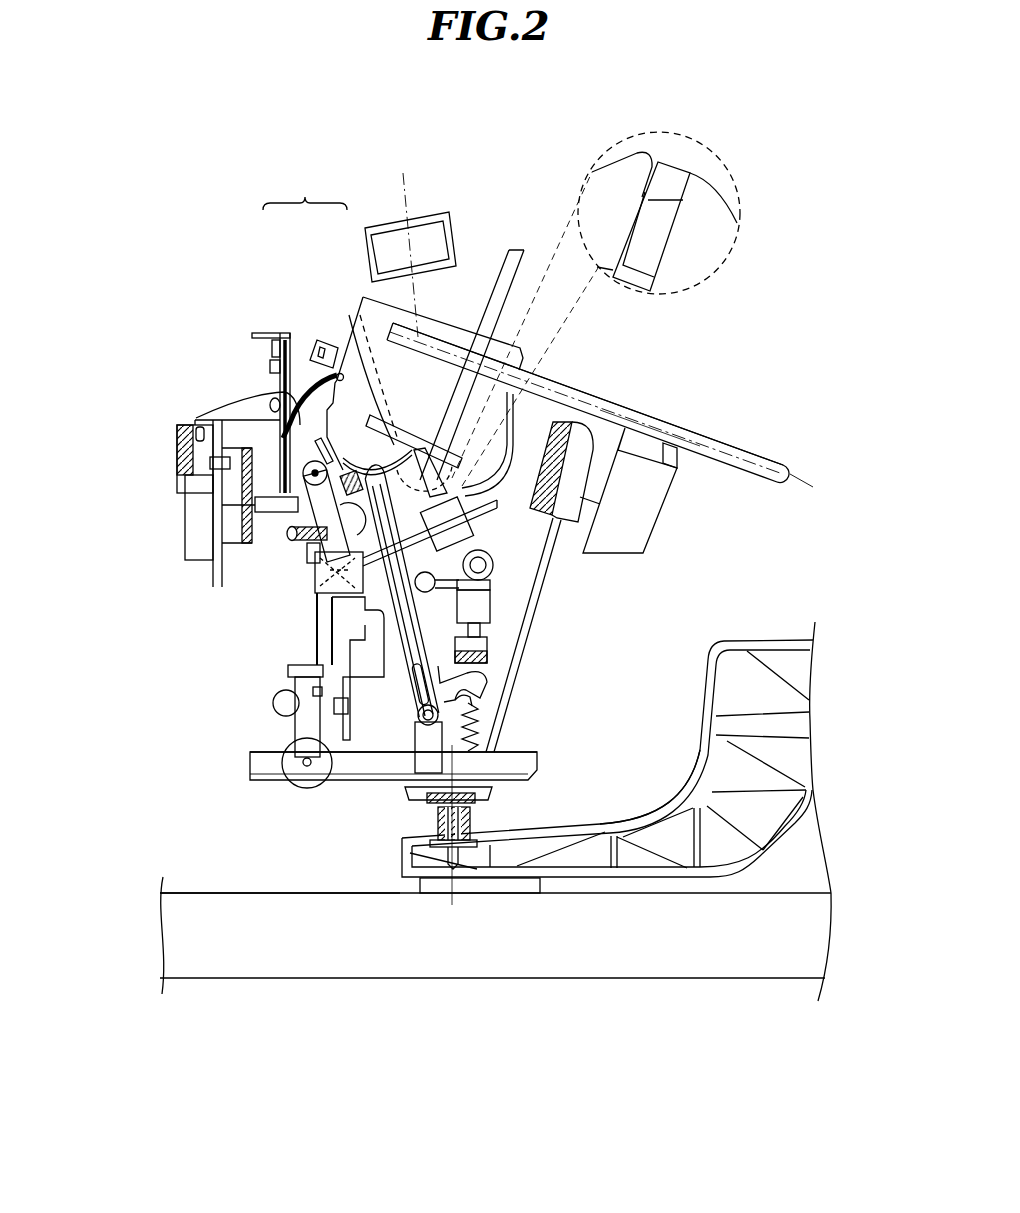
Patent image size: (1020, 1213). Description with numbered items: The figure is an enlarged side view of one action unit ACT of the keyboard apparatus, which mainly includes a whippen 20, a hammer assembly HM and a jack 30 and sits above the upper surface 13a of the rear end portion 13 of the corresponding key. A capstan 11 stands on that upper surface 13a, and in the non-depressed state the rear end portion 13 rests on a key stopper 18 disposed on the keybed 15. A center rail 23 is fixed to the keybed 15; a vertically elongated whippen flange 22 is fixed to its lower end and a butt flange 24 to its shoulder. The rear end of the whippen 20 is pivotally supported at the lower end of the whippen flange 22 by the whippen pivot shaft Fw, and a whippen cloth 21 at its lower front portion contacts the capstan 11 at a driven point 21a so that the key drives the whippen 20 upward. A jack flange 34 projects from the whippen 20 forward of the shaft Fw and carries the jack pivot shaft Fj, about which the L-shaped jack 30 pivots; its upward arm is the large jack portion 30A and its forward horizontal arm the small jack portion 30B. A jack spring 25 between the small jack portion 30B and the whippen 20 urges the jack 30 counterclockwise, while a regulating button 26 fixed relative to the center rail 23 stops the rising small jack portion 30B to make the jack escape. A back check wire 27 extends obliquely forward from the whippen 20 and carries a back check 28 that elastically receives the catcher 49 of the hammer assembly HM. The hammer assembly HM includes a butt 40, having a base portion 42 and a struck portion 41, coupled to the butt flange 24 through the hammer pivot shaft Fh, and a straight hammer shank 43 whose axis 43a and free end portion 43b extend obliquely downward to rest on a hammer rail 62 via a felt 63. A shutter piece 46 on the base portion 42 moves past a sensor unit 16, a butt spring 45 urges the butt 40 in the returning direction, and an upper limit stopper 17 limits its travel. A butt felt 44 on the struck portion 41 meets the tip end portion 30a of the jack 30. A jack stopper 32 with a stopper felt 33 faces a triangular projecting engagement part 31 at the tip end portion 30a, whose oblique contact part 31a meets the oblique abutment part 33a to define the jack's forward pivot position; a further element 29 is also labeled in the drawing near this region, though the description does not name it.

The capstan 11 is at (378, 878).
The rear end portion 13 is at (506, 866).
The upper surface of the rear end portion 13a is at (541, 840).
The keybed 15 is at (718, 964).
The sensor unit 16 is at (263, 347).
The upper limit stopper 17 is at (453, 272).
The key stopper 18 is at (430, 890).
The whippen 20 is at (538, 756).
The whippen cloth 21 is at (438, 808).
The driven point 21a is at (483, 835).
The whippen flange 22 is at (302, 730).
The center rail 23 is at (320, 628).
The butt flange 24 is at (318, 482).
The jack spring 25 is at (488, 733).
The regulating button 26 is at (490, 650).
The back check wire 27 is at (548, 548).
The back check 28 is at (587, 497).
The hook stopper 29 is at (497, 492).
The jack 30 is at (400, 637).
The tip end portion 30a is at (352, 328).
The large jack portion 30A is at (384, 646).
The small jack portion 30B is at (488, 692).
The projecting engagement part 31 is at (465, 366).
The contact part 31a is at (683, 200).
The jack stopper 32 is at (460, 466).
The stopper felt 33 is at (510, 335).
The abutment part 33a is at (633, 190).
The jack flange 34 is at (415, 742).
The butt 40 is at (305, 189).
The struck portion 41 is at (315, 339).
The base portion 42 is at (363, 296).
The hammer shank 43 is at (658, 412).
The axis of the hammer shank 43a is at (693, 416).
The free end portion of the hammer shank 43b is at (797, 472).
The butt felt 44 is at (318, 545).
The butt spring 45 is at (278, 384).
The shutter piece 46 is at (322, 335).
The catcher 49 is at (482, 516).
The hammer rail 62 is at (675, 495).
The felt 63 is at (678, 462).
The hammer assembly HM is at (455, 316).
The hammer pivot shaft Fh is at (305, 470).
The whippen pivot shaft Fw is at (306, 768).
The jack pivot shaft Fj is at (424, 719).
The action unit ACT is at (242, 769).